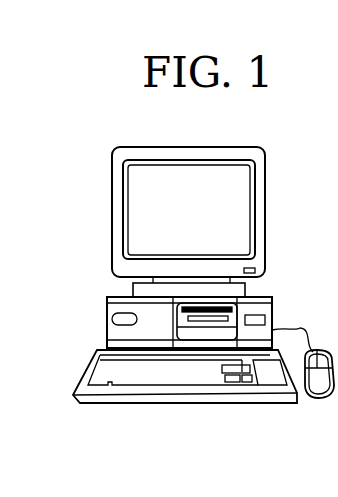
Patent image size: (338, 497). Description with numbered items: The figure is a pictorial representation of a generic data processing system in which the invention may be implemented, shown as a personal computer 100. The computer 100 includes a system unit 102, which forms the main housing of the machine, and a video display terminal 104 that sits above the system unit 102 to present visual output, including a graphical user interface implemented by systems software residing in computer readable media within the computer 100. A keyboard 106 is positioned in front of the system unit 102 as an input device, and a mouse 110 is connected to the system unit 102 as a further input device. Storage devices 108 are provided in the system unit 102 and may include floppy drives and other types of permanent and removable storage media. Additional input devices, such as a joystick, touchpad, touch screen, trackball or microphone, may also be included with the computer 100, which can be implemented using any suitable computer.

The computer 100 is at (93, 154).
The system unit 102 is at (107, 318).
The video display terminal 104 is at (266, 215).
The keyboard 106 is at (160, 405).
The storage devices 108 is at (272, 303).
The mouse 110 is at (318, 398).